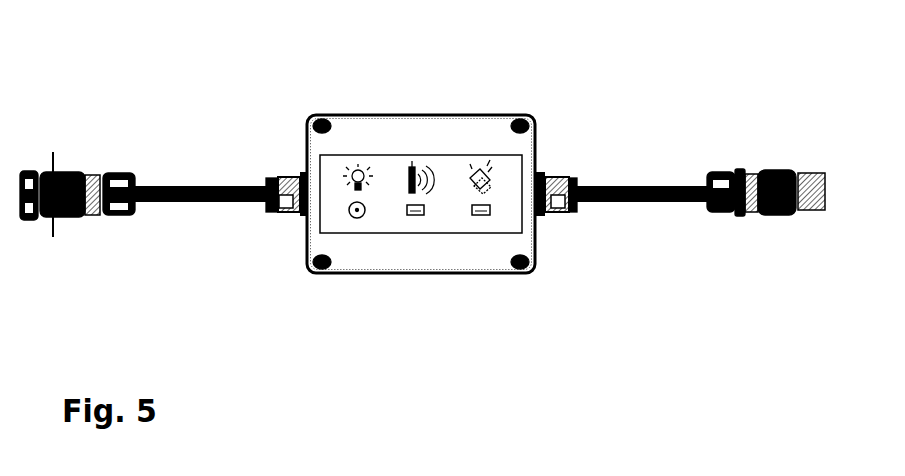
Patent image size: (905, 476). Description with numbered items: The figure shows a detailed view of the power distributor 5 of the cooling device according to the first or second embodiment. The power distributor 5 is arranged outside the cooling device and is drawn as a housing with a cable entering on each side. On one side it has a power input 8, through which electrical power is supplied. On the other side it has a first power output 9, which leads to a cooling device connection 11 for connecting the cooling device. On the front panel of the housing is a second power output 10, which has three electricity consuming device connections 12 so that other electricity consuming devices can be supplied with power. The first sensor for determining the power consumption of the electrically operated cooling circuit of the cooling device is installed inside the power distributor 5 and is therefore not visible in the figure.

The power distributor 5 is at (304, 99).
The power input 8 is at (605, 184).
The first power output 9 is at (282, 220).
The second power output 10 is at (504, 232).
The cooling device connection 11 is at (72, 217).
The electricity consuming device connections 12 is at (417, 218).